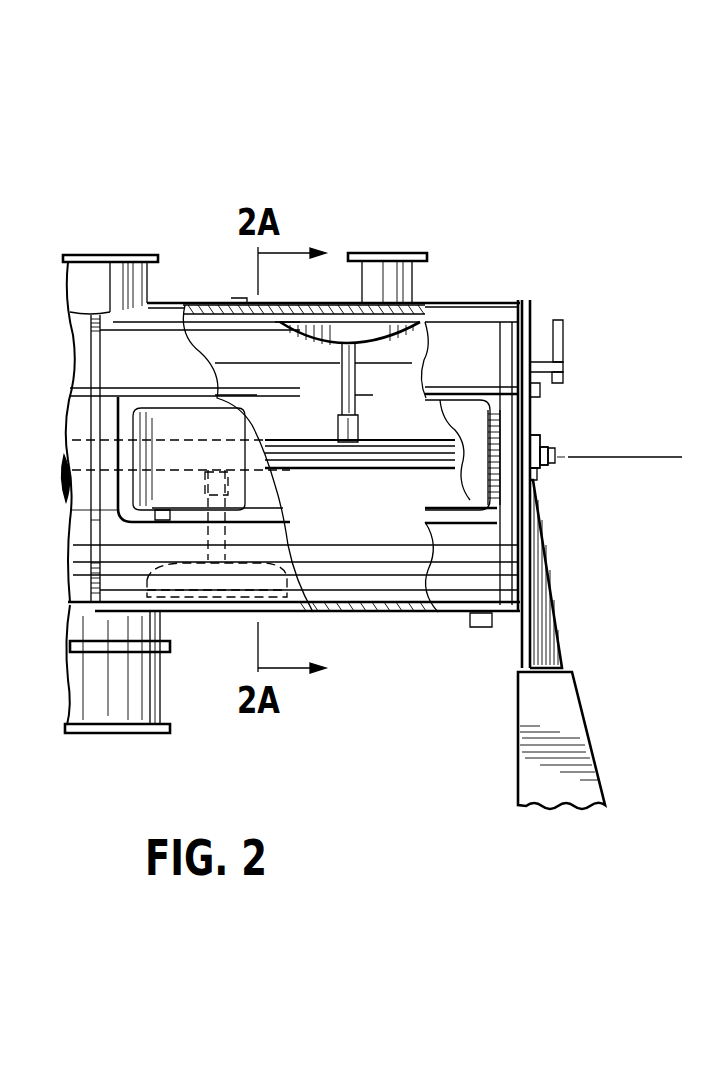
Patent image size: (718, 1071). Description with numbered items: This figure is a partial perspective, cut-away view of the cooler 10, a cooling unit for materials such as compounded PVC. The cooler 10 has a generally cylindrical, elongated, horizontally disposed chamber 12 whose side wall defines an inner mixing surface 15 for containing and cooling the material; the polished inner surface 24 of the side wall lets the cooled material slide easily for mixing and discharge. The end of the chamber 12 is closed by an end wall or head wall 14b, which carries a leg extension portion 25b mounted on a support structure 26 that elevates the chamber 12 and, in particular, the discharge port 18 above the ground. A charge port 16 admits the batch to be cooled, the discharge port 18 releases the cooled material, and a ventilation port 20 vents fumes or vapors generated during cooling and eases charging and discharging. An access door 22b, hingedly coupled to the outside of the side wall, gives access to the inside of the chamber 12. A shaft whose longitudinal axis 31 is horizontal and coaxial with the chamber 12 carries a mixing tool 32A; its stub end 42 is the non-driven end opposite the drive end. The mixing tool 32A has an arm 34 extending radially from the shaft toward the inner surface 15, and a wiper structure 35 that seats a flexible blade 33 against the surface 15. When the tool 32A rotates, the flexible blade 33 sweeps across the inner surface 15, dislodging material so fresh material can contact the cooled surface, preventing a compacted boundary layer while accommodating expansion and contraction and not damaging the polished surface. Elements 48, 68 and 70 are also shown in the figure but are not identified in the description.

The cooler 10 is at (221, 128).
The chamber 12 is at (466, 305).
The end wall 14b is at (533, 413).
The inner mixing surface 15 is at (393, 550).
The charge port 16 is at (115, 258).
The discharge port 18 is at (162, 705).
The ventilation port 20 is at (384, 255).
The access door 22b is at (155, 425).
The inner surface of the chamber side wall 24 is at (216, 328).
The leg extension portion 25b is at (522, 657).
The support structure 26 is at (532, 768).
The longitudinal axis 31 is at (639, 457).
The mixing tool 32A is at (328, 383).
The flexible blade 33 is at (318, 314).
The arm 34 is at (357, 375).
The wiper structure 35 is at (298, 343).
The stub end 42 is at (566, 452).
The washer 48 is at (533, 483).
The nut 68 is at (542, 447).
The chamber 70 is at (472, 370).